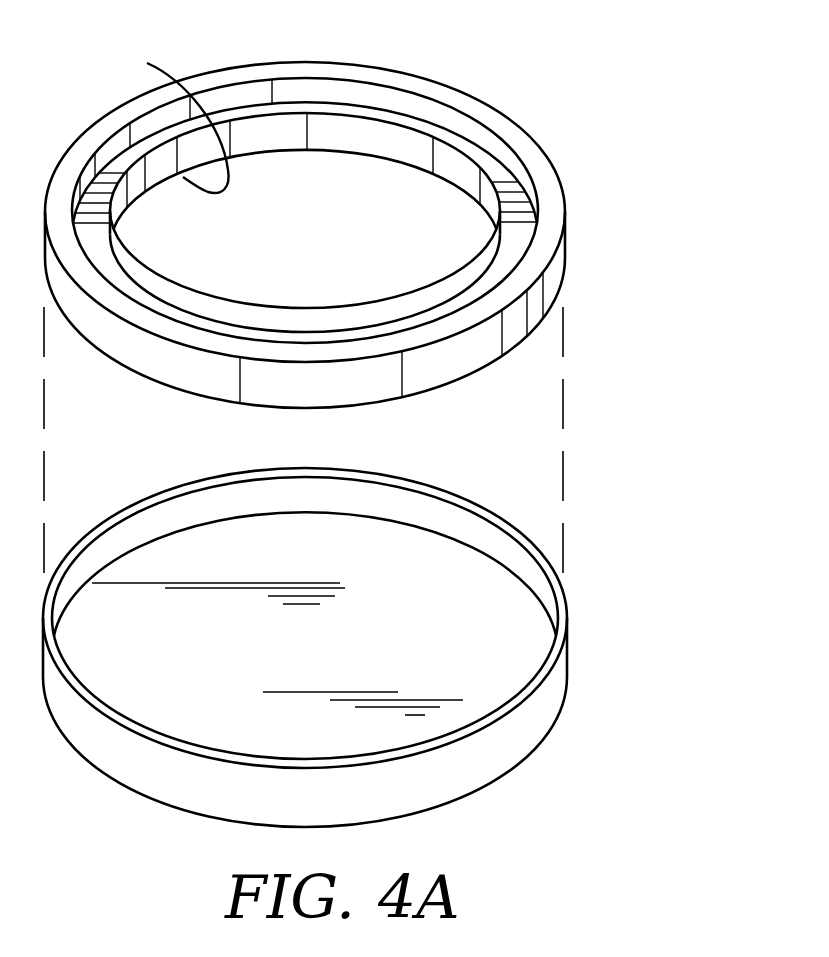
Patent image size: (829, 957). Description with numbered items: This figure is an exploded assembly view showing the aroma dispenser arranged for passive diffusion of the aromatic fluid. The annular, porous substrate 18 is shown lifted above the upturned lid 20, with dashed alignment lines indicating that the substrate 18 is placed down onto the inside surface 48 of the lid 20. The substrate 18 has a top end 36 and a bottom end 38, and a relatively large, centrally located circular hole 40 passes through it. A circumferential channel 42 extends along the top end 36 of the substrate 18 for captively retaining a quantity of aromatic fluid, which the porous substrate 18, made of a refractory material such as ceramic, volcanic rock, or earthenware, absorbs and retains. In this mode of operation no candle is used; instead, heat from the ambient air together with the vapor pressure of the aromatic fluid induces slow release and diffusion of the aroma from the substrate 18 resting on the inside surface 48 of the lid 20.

The annular porous substrate 18 is at (379, 218).
The lid 20 is at (393, 647).
The top end 36 is at (500, 127).
The bottom end 38 is at (167, 111).
The circular hole 40 is at (383, 113).
The circumferential channel 42 is at (517, 220).
The inside surface 48 is at (425, 727).